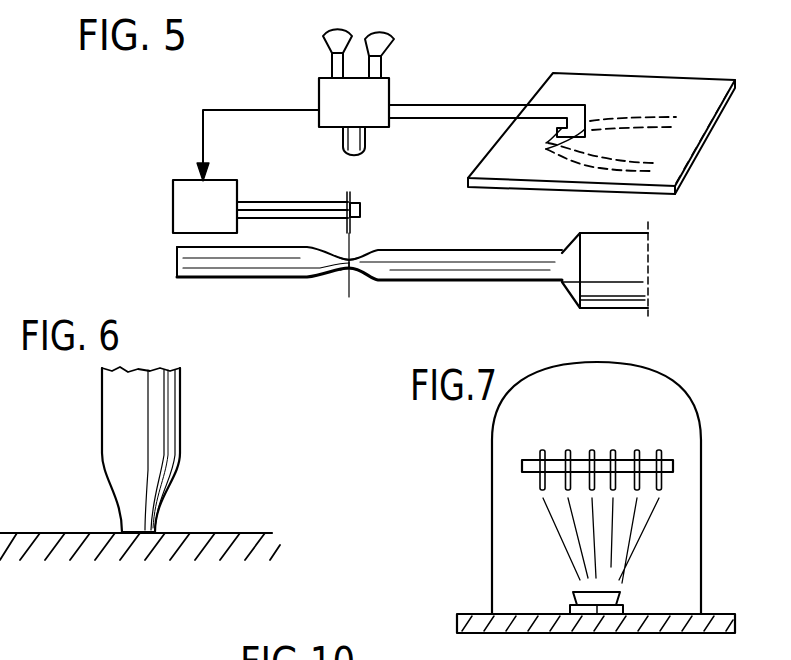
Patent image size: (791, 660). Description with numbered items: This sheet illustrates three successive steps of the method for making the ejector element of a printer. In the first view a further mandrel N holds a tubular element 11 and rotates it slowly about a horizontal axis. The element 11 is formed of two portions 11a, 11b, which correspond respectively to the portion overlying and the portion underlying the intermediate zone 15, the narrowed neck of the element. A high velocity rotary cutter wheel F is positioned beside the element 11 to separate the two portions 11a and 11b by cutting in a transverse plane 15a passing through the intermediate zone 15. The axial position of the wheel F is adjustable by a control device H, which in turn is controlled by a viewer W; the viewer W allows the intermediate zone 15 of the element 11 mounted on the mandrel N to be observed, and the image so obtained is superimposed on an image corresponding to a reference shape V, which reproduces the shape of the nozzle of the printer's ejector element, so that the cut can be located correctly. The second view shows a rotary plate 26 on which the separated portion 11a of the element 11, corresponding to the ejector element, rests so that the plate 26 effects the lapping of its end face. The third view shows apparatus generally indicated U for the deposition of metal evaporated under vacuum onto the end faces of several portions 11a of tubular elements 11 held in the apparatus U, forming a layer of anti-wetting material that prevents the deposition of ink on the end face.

In FIG. 5, the viewer W is at (325, 98).
In FIG. 5, the reference shape V is at (624, 120).
In FIG. 5, the control device H is at (228, 182).
In FIG. 5, the rotary cutter wheel F is at (356, 188).
In FIG. 5, the tubular element 11 is at (273, 290).
In FIG. 5, the portion of the tubular element 11a is at (213, 279).
In FIG. 6, the portion of the tubular element 11a is at (172, 430).
In FIG. 7, the portion of the tubular element 11a is at (592, 449).
In FIG. 5, the portion of the tubular element 11b is at (516, 274).
In FIG. 5, the intermediate zone 15 is at (337, 281).
In FIG. 5, the transverse plane 15a is at (349, 288).
In FIG. 5, the mandrel N is at (630, 270).
In FIG. 6, the rotary plate 26 is at (225, 555).
In FIG. 7, the apparatus for deposition of metal U is at (684, 380).